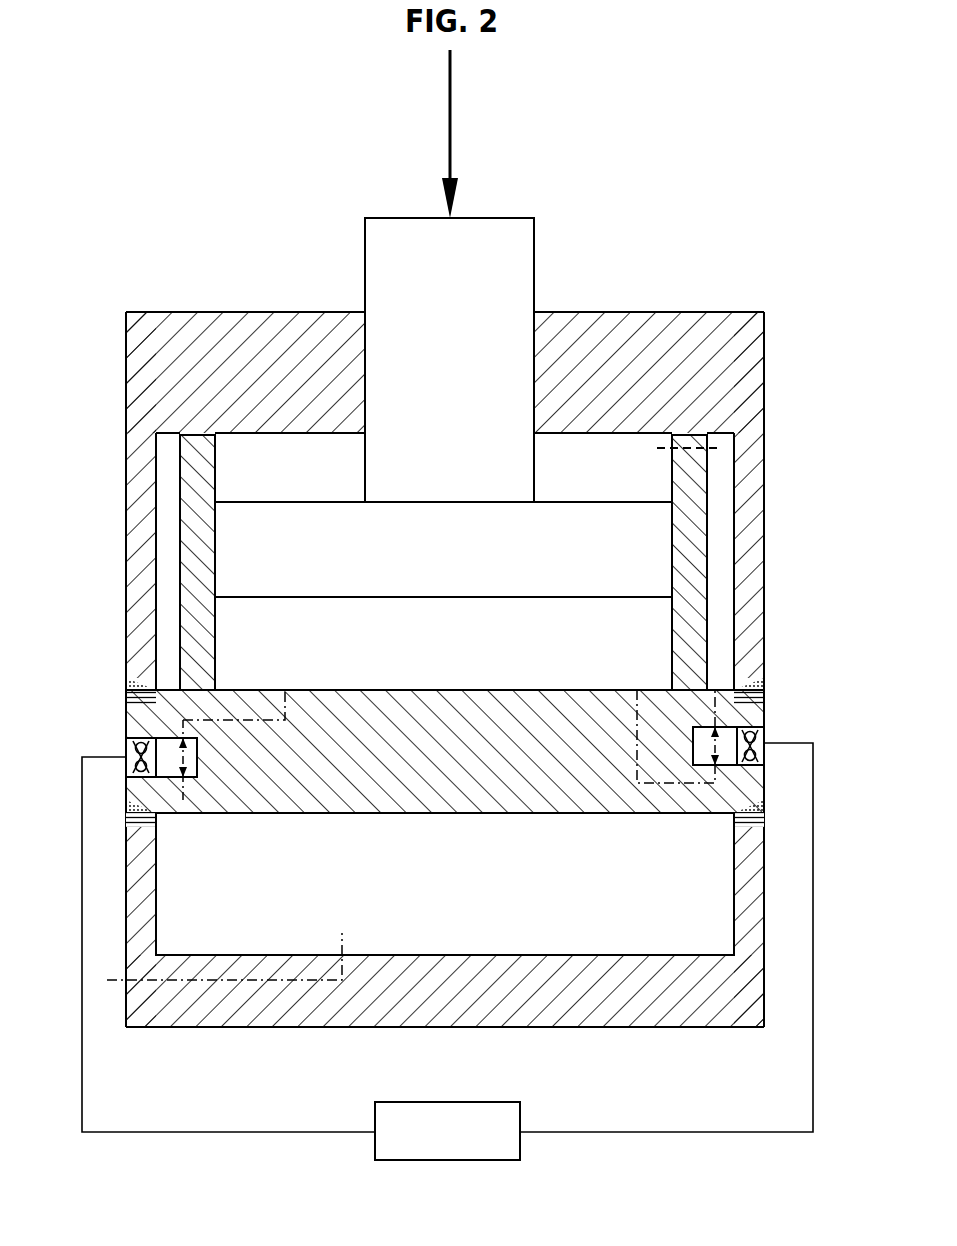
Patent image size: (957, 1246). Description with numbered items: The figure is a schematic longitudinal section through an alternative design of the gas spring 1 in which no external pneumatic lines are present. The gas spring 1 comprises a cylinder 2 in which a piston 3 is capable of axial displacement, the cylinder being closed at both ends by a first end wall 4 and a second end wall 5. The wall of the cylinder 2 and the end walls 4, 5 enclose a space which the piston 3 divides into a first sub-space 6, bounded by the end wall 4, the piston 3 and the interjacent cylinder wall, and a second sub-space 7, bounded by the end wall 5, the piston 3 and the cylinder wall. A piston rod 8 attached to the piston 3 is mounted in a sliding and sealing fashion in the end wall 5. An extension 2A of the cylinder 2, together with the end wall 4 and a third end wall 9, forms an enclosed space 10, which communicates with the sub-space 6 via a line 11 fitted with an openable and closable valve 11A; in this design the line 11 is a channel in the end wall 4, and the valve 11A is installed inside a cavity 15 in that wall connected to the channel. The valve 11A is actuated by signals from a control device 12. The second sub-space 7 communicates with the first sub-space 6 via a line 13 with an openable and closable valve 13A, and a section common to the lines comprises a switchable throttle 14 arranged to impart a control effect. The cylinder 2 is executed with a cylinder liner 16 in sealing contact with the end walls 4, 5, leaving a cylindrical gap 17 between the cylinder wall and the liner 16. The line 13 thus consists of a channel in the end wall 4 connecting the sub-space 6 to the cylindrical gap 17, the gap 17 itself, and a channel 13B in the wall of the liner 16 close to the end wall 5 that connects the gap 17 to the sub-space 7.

The gas spring 1 is at (777, 376).
The cylinder 2 is at (140, 480).
The extension of the cylinder 2A is at (142, 878).
The piston 3 is at (265, 543).
The first end wall 4 is at (172, 776).
The second end wall 5 is at (180, 333).
The first sub-space 6 is at (263, 610).
The second sub-space 7 is at (242, 468).
The piston rod 8 is at (503, 272).
The third end wall 9 is at (276, 1000).
The enclosed space 10 is at (188, 918).
The line 11 is at (207, 718).
The valve 11A is at (130, 745).
The control device 12 is at (448, 1162).
The line 13 is at (680, 785).
The valve 13A is at (762, 757).
The channel 13B is at (688, 448).
The switchable throttle 14 is at (635, 735).
The cavity 15 is at (237, 786).
The cylinder liner 16 is at (198, 583).
The cylindrical gap 17 is at (170, 512).